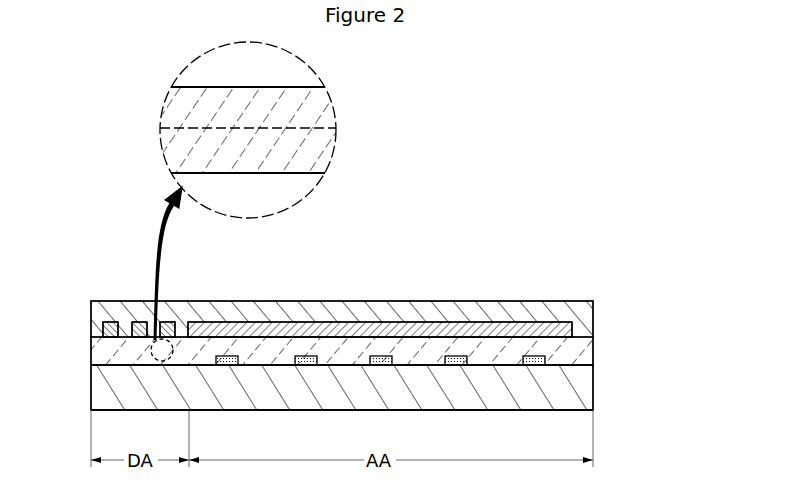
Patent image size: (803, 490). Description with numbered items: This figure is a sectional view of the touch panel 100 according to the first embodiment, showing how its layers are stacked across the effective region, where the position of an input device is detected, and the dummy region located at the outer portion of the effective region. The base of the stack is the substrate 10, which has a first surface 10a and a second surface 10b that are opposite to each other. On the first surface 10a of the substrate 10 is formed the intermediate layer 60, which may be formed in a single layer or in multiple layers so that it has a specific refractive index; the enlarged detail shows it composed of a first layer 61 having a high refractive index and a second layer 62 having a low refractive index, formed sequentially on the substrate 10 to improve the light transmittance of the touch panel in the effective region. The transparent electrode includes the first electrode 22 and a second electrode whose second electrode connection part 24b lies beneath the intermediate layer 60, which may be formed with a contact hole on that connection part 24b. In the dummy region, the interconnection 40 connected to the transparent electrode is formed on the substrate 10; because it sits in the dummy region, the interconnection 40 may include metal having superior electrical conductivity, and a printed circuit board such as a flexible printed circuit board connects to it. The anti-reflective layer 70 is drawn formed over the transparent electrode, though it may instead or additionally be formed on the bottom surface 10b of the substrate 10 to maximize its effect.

The touch panel 100 is at (126, 247).
The substrate 10 is at (582, 390).
The first surface 10a is at (413, 365).
The second surface 10b is at (533, 401).
The first electrode 22 is at (593, 326).
The second electrode connection part 24b is at (533, 356).
The interconnection 40 is at (101, 326).
The intermediate layer 60 is at (578, 355).
The first layer 61 is at (168, 107).
The second layer 62 is at (168, 151).
The anti-reflective layer 70 is at (565, 306).